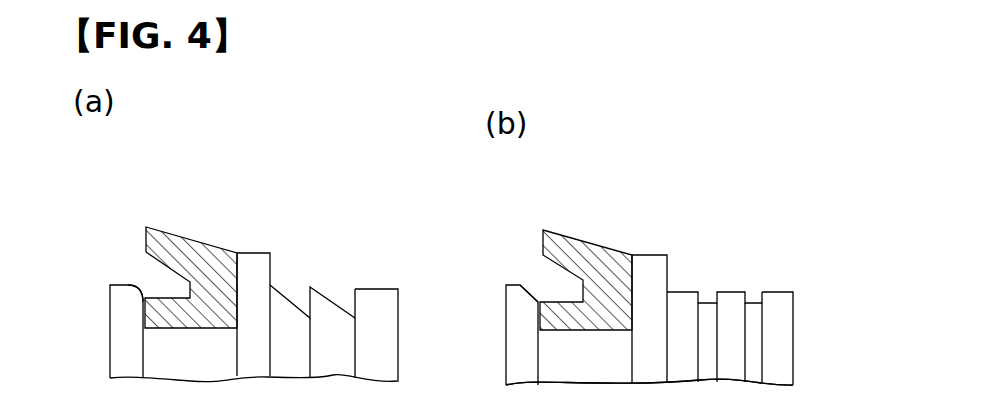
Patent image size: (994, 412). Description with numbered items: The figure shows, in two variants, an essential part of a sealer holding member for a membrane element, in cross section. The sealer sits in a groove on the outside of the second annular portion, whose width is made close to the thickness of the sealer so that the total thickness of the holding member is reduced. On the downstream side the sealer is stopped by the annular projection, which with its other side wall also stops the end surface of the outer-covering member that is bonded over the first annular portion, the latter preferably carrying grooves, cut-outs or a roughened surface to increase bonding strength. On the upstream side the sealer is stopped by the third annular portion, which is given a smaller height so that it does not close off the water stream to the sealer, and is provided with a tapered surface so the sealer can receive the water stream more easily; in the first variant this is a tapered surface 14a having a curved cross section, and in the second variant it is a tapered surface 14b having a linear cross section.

The tapered surface having a curved cross section 14a is at (140, 285).
The tapered surface having a linear cross section 14b is at (537, 286).